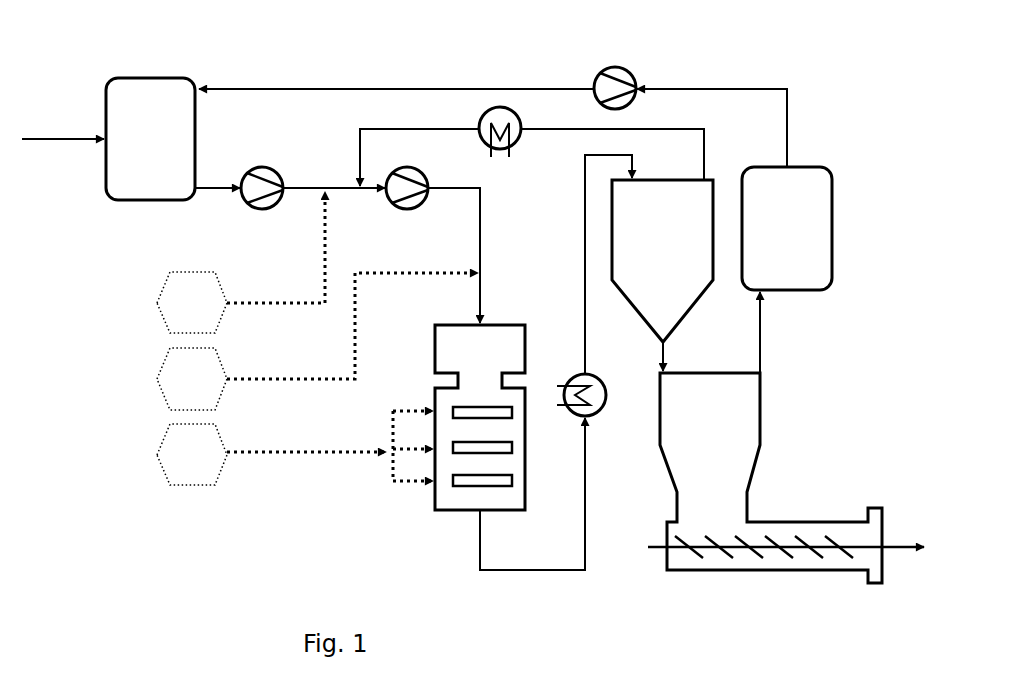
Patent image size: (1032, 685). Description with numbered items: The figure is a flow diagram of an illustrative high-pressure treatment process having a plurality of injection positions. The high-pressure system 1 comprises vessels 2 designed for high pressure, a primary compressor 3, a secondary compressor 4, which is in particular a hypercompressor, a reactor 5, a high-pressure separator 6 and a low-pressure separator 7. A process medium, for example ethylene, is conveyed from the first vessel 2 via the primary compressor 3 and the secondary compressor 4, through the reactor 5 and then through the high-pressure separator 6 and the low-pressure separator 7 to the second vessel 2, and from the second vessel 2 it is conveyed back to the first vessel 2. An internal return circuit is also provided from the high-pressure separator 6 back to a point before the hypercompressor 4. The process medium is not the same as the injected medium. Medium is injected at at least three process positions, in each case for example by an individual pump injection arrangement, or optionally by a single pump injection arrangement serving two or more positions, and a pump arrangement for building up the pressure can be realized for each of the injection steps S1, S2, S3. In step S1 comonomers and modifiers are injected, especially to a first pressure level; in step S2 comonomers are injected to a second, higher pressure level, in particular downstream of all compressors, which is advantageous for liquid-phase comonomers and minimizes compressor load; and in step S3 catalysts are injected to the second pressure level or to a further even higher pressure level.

The high-pressure system 1 is at (101, 44).
The vessels 2 is at (153, 136).
The primary compressor 3 is at (251, 159).
The secondary compressor 4 is at (431, 216).
The reactor 5 is at (486, 361).
The high-pressure separator 6 is at (669, 241).
The low-pressure separator 7 is at (716, 428).
The injection step S1 is at (241, 262).
The injection step S2 is at (317, 341).
The injection step S3 is at (295, 448).